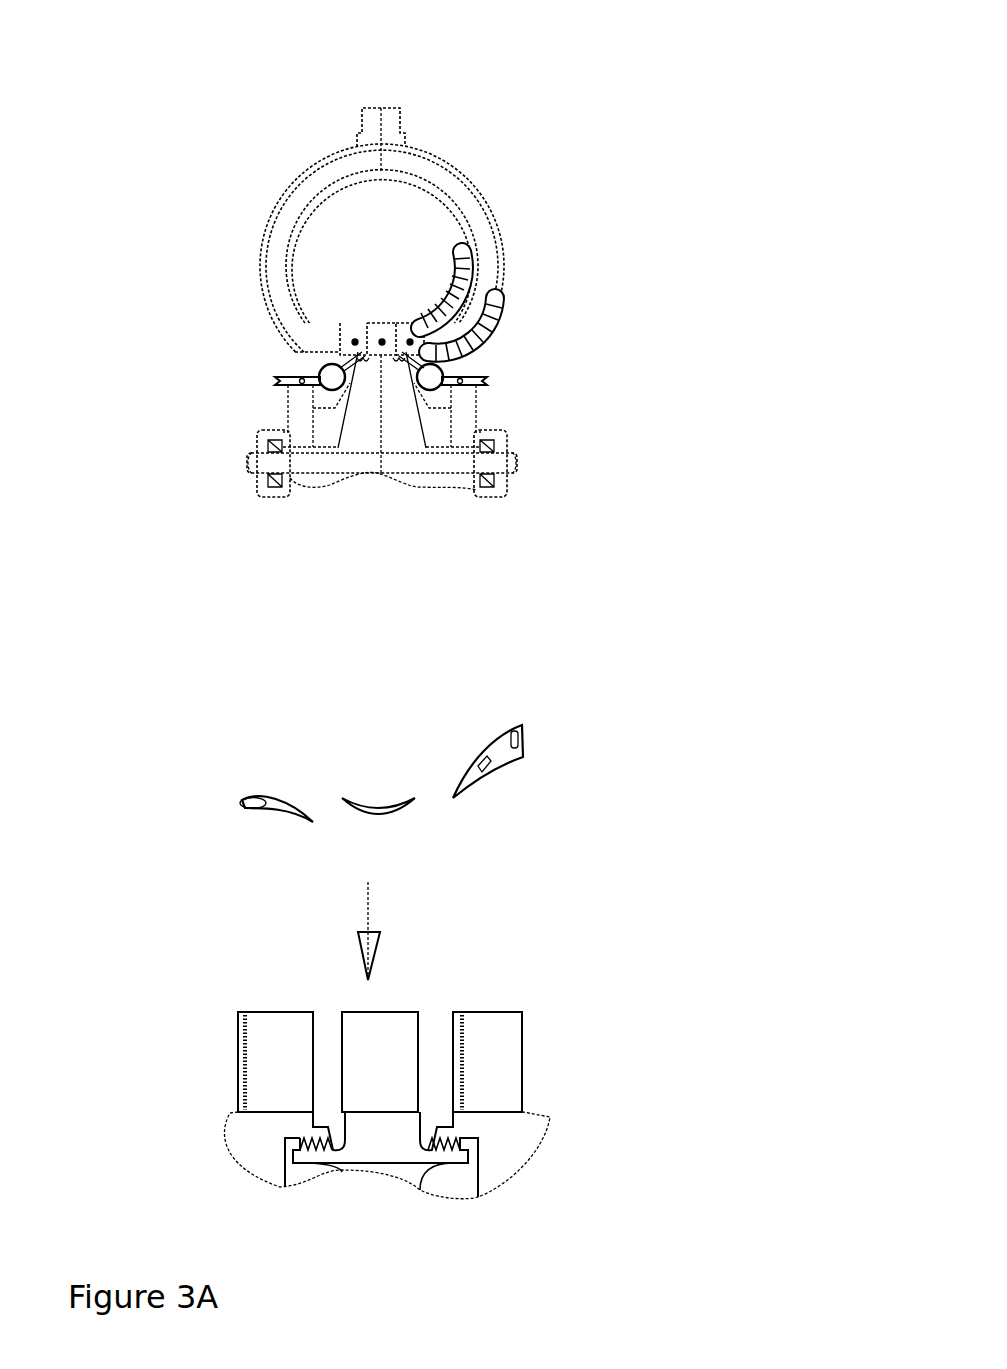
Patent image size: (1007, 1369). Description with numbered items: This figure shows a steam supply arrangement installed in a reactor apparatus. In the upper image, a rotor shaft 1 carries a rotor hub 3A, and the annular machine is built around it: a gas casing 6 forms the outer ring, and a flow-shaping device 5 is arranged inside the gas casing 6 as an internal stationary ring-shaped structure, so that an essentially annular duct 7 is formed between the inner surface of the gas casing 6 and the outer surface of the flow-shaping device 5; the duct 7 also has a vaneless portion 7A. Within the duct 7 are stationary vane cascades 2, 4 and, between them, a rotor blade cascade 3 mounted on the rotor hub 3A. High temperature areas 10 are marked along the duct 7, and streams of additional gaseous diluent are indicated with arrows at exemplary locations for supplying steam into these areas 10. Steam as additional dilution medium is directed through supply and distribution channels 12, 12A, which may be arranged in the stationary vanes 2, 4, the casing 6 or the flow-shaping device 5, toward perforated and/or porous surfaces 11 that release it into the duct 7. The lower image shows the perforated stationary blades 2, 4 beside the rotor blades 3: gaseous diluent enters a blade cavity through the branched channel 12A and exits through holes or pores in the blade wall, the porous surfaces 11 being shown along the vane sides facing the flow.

The rotor shaft 1 is at (248, 470).
The stationary vane cascade 2 is at (352, 338).
The rotor blade cascade 3 is at (380, 338).
The stationary vane cascade 4 is at (408, 338).
The flow-shaping device 5 is at (453, 213).
The gas casing 6 is at (430, 153).
The duct 7 is at (426, 205).
The vaneless portion of the duct 7A is at (440, 177).
The high temperature area 10 is at (490, 308).
The perforated and/or porous surfaces 11 is at (247, 808).
The supply and distribution channels 12 is at (385, 574).
The branched channel 12A is at (292, 368).
The rotor hub 3A is at (397, 460).